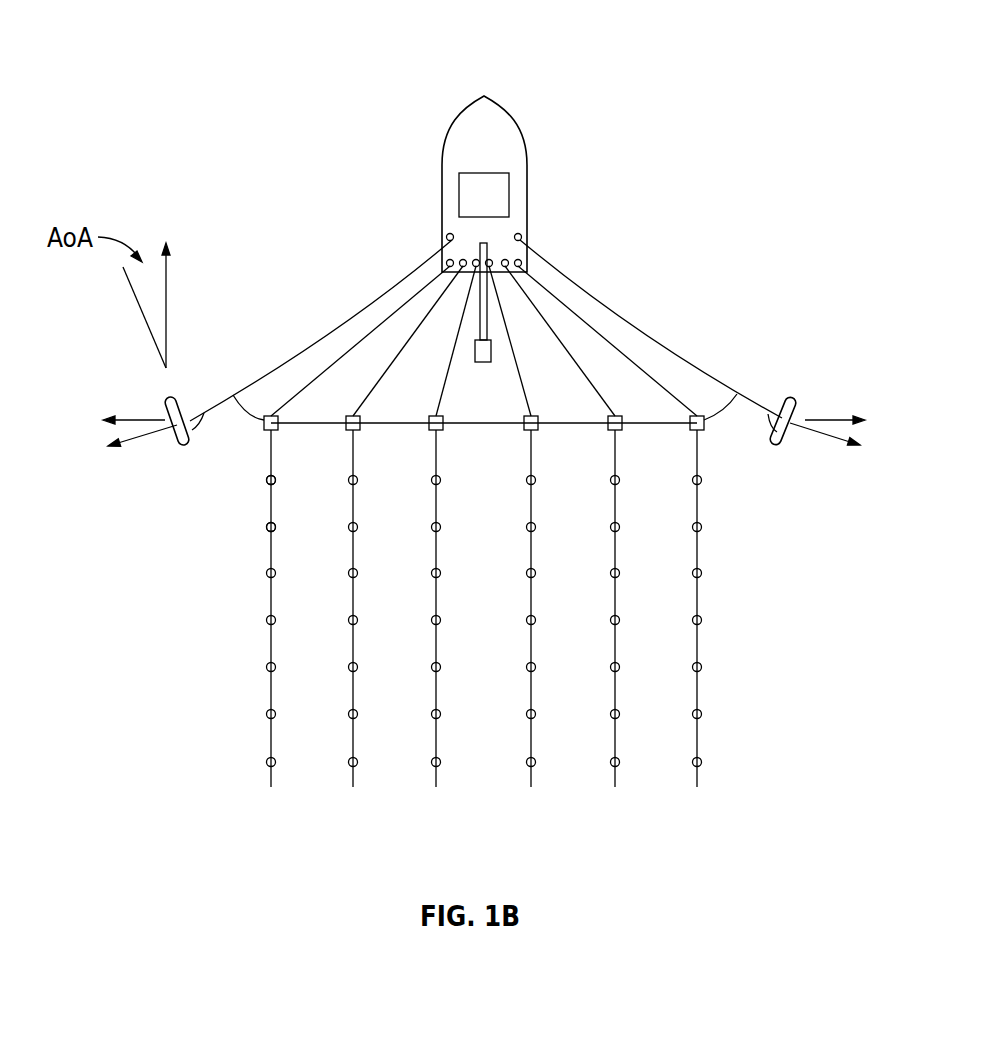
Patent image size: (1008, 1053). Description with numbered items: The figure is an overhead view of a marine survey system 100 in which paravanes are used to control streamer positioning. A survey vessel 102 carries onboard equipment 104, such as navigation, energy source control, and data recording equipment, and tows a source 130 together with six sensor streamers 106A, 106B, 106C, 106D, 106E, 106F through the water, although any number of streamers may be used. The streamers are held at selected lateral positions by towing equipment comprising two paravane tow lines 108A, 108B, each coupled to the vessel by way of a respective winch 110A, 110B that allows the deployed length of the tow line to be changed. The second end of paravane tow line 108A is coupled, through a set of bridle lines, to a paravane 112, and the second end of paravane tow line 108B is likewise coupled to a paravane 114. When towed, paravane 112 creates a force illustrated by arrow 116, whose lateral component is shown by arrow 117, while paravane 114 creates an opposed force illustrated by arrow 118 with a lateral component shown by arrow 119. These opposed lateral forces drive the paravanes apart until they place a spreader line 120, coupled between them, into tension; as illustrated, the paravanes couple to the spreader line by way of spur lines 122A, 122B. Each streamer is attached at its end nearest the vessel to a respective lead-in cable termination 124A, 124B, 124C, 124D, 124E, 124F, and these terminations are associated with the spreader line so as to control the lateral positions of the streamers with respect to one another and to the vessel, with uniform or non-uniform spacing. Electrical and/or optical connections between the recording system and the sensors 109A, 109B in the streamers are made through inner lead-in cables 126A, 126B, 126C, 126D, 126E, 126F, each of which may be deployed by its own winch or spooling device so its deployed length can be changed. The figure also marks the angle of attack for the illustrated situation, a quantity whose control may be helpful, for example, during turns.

The marine survey system 100 is at (314, 40).
The survey vessel 102 is at (515, 126).
The onboard equipment 104 is at (498, 191).
The sensor streamer 106A is at (271, 787).
The sensor streamer 106B is at (353, 787).
The sensor streamer 106C is at (436, 787).
The sensor streamer 106D is at (531, 787).
The sensor streamer 106E is at (615, 787).
The sensor streamer 106F is at (697, 787).
The paravane tow line 108A is at (424, 258).
The paravane tow line 108B is at (652, 340).
The sensor 109A is at (266, 482).
The sensor 109B is at (266, 529).
The winch 110A is at (446, 235).
The winch 110B is at (522, 235).
The paravane 112 is at (187, 448).
The paravane 114 is at (797, 392).
The force arrow 116 is at (130, 437).
The lateral force component arrow 117 is at (123, 418).
The force arrow 118 is at (830, 440).
The lateral force component arrow 119 is at (840, 417).
The spreader line 120 is at (468, 418).
The spur line 122A is at (250, 420).
The spur line 122B is at (716, 421).
The lead-in cable termination 124A is at (276, 431).
The lead-in cable termination 124B is at (358, 431).
The lead-in cable termination 124C is at (441, 431).
The lead-in cable termination 124D is at (536, 431).
The lead-in cable termination 124E is at (620, 431).
The lead-in cable termination 124F is at (703, 431).
The inner lead-in cable 126A is at (428, 290).
The inner lead-in cable 126B is at (398, 368).
The inner lead-in cable 126C is at (437, 418).
The inner lead-in cable 126D is at (501, 305).
The inner lead-in cable 126E is at (553, 340).
The inner lead-in cable 126F is at (650, 377).
The source 130 is at (472, 347).